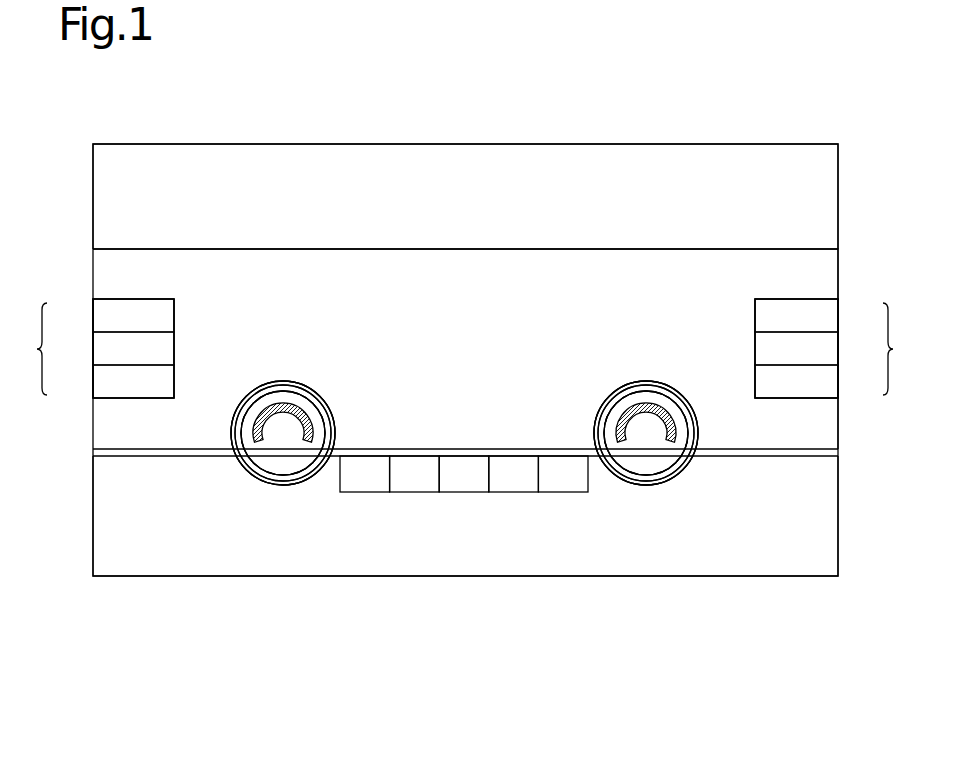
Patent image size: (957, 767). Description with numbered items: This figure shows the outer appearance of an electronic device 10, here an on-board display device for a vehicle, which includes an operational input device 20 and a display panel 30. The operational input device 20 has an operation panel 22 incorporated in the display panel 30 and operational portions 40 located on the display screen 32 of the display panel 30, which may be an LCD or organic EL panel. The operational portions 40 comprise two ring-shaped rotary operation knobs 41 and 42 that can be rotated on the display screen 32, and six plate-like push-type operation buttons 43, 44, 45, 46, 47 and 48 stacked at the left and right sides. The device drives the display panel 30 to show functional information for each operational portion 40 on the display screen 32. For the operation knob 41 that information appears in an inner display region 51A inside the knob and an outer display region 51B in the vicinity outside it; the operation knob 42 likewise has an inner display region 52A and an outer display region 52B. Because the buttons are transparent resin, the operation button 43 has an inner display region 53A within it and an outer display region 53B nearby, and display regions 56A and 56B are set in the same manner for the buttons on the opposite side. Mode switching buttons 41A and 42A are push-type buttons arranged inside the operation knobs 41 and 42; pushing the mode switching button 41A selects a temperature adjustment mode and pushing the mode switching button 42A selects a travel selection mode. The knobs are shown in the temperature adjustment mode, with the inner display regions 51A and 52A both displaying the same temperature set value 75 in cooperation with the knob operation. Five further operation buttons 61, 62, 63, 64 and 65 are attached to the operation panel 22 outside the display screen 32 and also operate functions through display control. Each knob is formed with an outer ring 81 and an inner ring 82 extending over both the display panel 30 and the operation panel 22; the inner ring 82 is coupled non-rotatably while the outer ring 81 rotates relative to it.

The electronic device 10 is at (806, 126).
The operational input device 20 is at (838, 198).
The operation panel 22 is at (830, 497).
The display panel 30 is at (838, 262).
The display screen 32 is at (466, 258).
The operational portions 40 is at (465, 418).
The operation knob 41 is at (237, 463).
The mode switching button 41A is at (283, 465).
The operation knob 42 is at (692, 464).
The mode switching button 42A is at (646, 465).
The operation button 43 is at (100, 317).
The operation button 44 is at (100, 350).
The operation button 45 is at (100, 384).
The operation button 46 is at (828, 317).
The operation button 47 is at (828, 350).
The operation button 48 is at (828, 384).
The inner display region 51A is at (326, 423).
The outer display region 51B is at (259, 365).
The inner display region 52A is at (602, 423).
The outer display region 52B is at (622, 365).
The inner display region 53A is at (174, 310).
The outer display region 53B is at (163, 288).
The right information box 56A is at (764, 314).
The right information display area 56B is at (812, 288).
The operation button 61 is at (365, 483).
The operation button 62 is at (415, 483).
The operation button 63 is at (464, 483).
The operation button 64 is at (514, 483).
The operation button 65 is at (563, 483).
The speed value gauge 75 is at (464, 425).
The outer ring 81 is at (242, 398).
The inner ring 82 is at (316, 388).